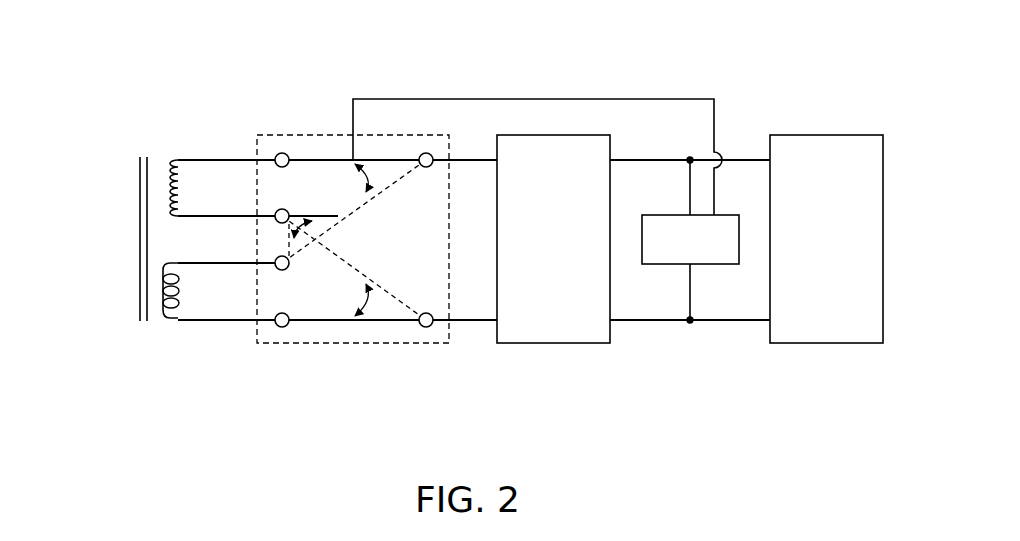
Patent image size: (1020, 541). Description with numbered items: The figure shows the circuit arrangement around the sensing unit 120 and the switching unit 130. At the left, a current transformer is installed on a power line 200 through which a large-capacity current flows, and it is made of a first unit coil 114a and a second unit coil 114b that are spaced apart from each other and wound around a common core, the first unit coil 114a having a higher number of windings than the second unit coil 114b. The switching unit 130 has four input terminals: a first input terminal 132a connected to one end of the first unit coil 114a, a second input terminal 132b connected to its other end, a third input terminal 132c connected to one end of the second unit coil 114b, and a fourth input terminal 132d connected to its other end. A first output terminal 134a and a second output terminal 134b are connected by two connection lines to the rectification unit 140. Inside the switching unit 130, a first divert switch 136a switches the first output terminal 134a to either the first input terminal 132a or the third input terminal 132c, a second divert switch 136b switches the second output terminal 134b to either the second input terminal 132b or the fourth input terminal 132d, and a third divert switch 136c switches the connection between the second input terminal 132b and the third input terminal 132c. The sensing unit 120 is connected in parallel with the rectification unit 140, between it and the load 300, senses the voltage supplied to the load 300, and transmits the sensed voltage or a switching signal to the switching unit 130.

The power line 200 is at (140, 205).
The first unit coil 114a is at (170, 157).
The second unit coil 114b is at (168, 322).
The switching unit 130 is at (320, 344).
The first input terminal 132a is at (283, 152).
The second input terminal 132b is at (280, 208).
The third input terminal 132c is at (278, 270).
The fourth input terminal 132d is at (281, 328).
The first output terminal 134a is at (422, 153).
The second output terminal 134b is at (428, 328).
The first divert switch 136a is at (326, 153).
The second divert switch 136b is at (376, 327).
The third divert switch 136c is at (334, 222).
The rectification unit 140 is at (555, 344).
The sensing unit 120 is at (660, 265).
The load 300 is at (823, 134).